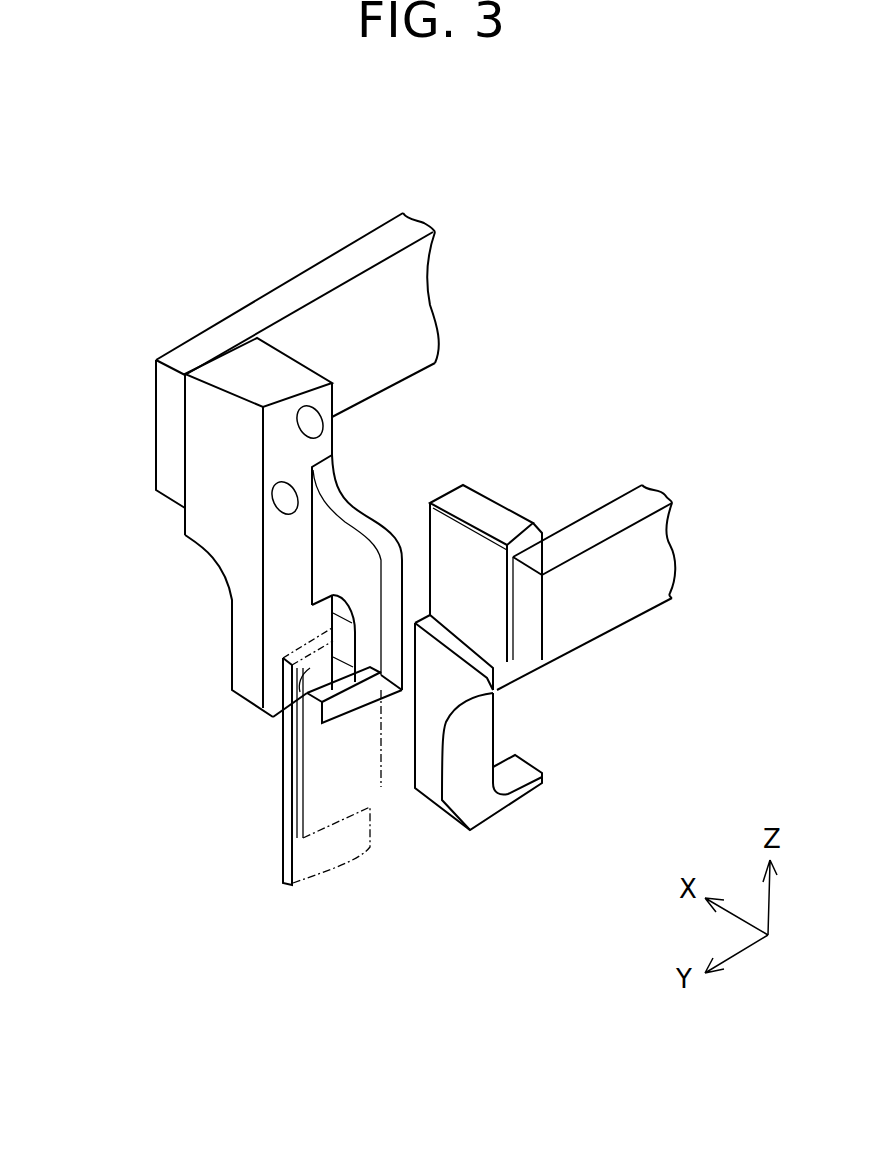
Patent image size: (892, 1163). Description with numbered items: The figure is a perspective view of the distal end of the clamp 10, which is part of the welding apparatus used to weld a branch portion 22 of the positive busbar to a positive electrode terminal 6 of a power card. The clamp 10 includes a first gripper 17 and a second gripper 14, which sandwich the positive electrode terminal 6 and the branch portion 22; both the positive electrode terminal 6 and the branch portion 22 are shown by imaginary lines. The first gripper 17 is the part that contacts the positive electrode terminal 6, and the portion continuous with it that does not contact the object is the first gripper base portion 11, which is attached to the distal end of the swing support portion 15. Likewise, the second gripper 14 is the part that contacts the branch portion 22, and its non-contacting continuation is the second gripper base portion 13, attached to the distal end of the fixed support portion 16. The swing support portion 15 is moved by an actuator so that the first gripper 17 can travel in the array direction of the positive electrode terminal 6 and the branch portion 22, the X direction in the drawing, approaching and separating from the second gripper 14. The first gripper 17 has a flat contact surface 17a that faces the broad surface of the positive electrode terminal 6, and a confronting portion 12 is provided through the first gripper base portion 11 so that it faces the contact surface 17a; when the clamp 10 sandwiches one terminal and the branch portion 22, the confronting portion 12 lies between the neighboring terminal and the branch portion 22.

The positive electrode terminal 6 is at (316, 850).
The clamp 10 is at (580, 230).
The first gripper base portion 11 is at (208, 508).
The confronting portion 12 is at (325, 712).
The second gripper base portion 13 is at (487, 513).
The second gripper 14 is at (521, 772).
The swing support portion 15 is at (343, 262).
The fixed support portion 16 is at (617, 603).
The first gripper 17 is at (243, 662).
The contact surface 17a is at (297, 600).
The branch portion 22 is at (370, 778).